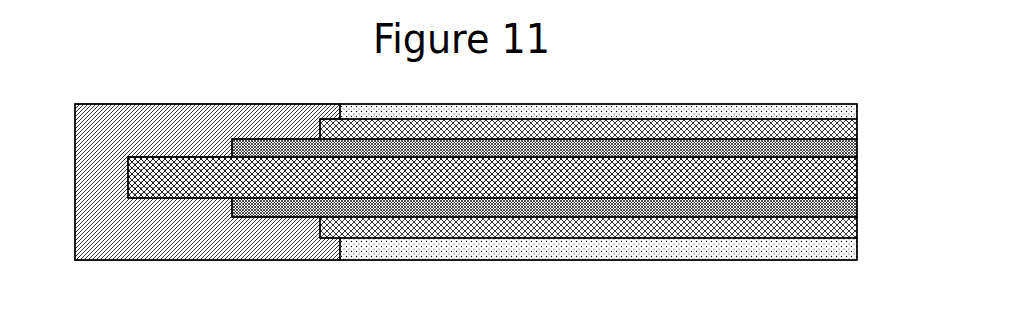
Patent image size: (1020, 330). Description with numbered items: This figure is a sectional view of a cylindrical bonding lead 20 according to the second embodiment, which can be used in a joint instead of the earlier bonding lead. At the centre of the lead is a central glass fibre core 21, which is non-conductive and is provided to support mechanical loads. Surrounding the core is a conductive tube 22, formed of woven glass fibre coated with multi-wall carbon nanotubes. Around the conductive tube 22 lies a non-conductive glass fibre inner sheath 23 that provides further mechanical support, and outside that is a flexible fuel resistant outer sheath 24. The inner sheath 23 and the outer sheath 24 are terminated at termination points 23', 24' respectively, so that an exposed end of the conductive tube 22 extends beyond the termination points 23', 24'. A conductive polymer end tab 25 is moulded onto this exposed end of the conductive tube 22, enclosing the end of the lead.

The cylindrical bonding lead 20 is at (360, 283).
The central glass fibre core 21 is at (158, 162).
The conductive tube 22 is at (255, 143).
The inner sheath 23 is at (588, 105).
The termination point of inner sheath 23' is at (569, 256).
The outer sheath 24 is at (598, 95).
The termination point of outer sheath 24' is at (581, 163).
The conductive polymer end tab 25 is at (160, 245).